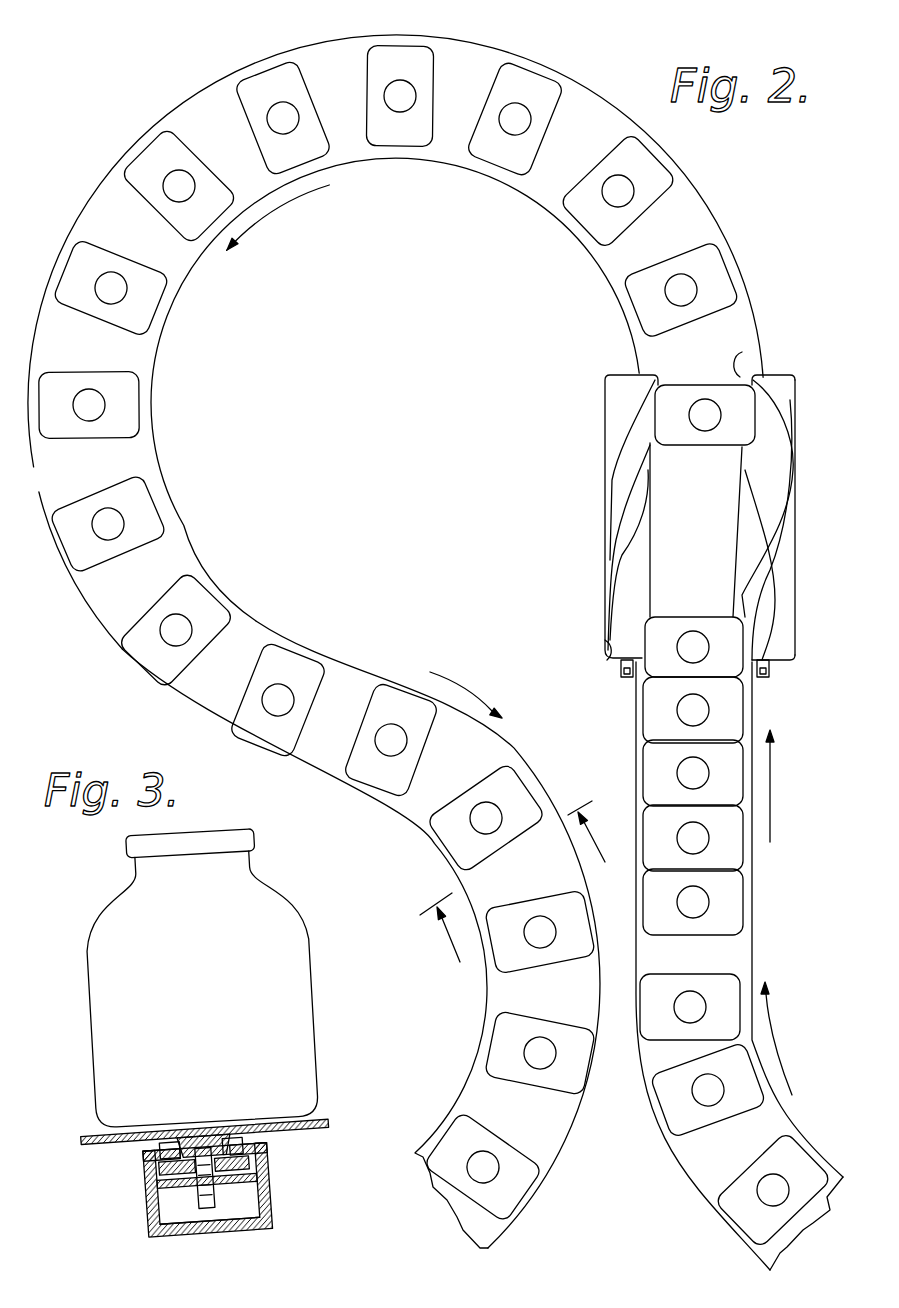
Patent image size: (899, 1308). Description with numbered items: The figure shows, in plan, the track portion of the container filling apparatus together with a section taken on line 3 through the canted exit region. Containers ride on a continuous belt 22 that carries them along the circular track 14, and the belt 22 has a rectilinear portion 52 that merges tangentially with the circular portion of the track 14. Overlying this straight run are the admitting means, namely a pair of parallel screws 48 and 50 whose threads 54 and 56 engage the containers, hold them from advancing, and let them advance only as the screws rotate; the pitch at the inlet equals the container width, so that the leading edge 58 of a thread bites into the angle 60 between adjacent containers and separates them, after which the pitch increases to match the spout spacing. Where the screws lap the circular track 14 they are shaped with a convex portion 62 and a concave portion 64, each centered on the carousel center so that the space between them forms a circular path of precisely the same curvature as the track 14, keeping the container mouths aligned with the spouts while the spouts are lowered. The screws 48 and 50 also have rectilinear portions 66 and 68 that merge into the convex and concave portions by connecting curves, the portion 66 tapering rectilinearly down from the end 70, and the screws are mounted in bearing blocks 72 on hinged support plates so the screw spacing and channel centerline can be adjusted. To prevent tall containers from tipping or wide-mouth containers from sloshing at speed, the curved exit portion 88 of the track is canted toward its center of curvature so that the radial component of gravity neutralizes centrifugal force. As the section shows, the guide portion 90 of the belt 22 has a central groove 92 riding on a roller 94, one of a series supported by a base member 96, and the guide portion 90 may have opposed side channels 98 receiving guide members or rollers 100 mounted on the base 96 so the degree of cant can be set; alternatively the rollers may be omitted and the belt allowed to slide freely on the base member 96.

In FIG. 2, the track 14 is at (719, 197).
In FIG. 3, the track 14 is at (294, 1224).
In FIG. 2, the continuous belt 22 is at (253, 627).
In FIG. 3, the continuous belt 22 is at (323, 1113).
In FIG. 2, the section line 3— 3 is at (520, 892).
In FIG. 2, the screw 48 is at (591, 485).
In FIG. 2, the screw 50 is at (806, 474).
In FIG. 2, the rectilinear portion 52 is at (708, 560).
In FIG. 2, the thread 54 is at (661, 382).
In FIG. 2, the thread 56 is at (748, 342).
In FIG. 2, the leading edge of the thread 58 is at (610, 648).
In FIG. 2, the angle between the containers 60 is at (742, 621).
In FIG. 2, the convex portion 62 is at (613, 404).
In FIG. 2, the concave portion 64 is at (790, 412).
In FIG. 2, the rectilinear portion 66 is at (625, 518).
In FIG. 2, the rectilinear portion 68 is at (767, 605).
In FIG. 2, the end 70 is at (620, 668).
In FIG. 2, the bearing block 72 is at (630, 683).
In FIG. 2, the curved exit portion 88 is at (436, 868).
In FIG. 3, the curved exit portion 88 is at (308, 1166).
In FIG. 3, the guide portion 90 is at (148, 1158).
In FIG. 3, the central groove 92 is at (162, 1190).
In FIG. 3, the roller 94 is at (218, 1200).
In FIG. 3, the base member 96 is at (178, 1233).
In FIG. 3, the side channels 98 is at (184, 1140).
In FIG. 3, the guide members 100 is at (163, 1148).